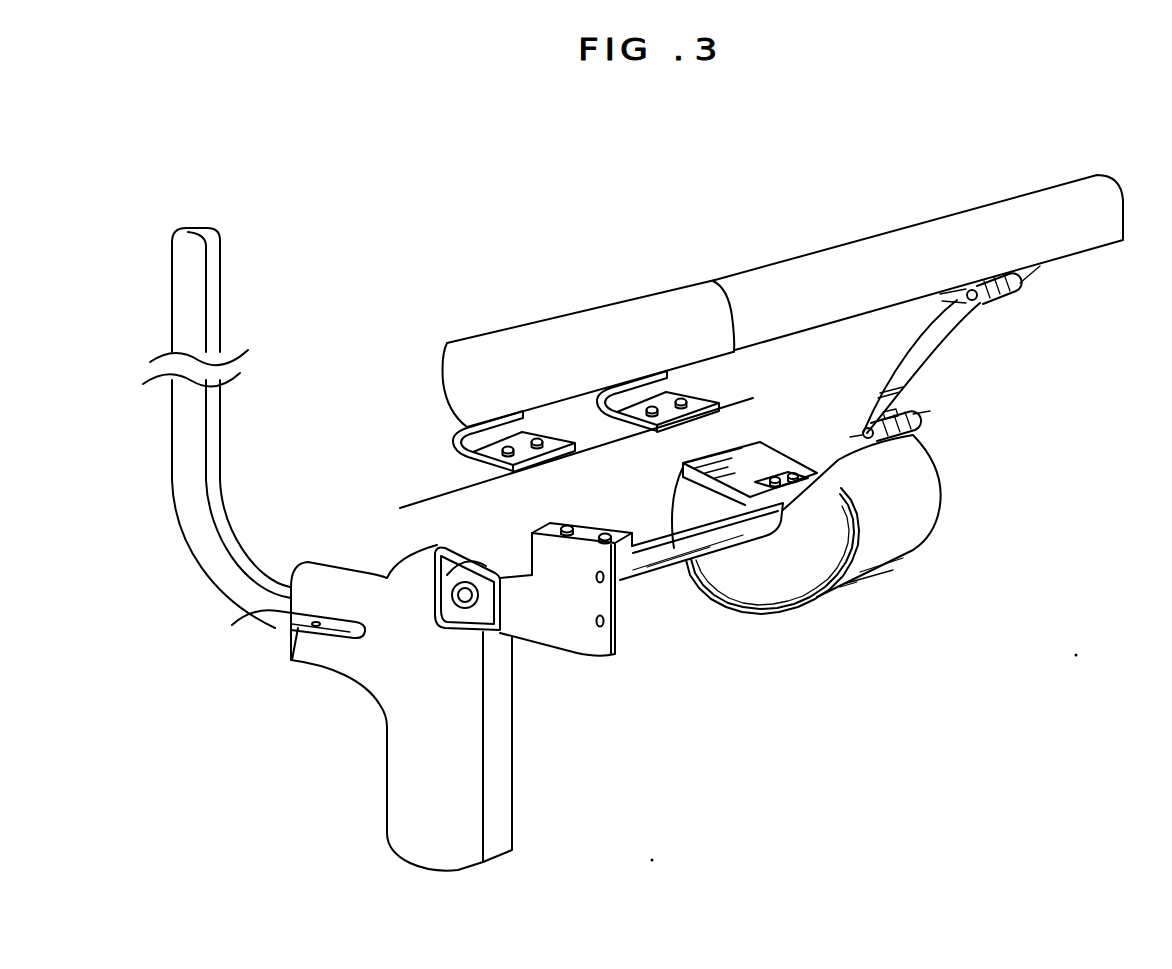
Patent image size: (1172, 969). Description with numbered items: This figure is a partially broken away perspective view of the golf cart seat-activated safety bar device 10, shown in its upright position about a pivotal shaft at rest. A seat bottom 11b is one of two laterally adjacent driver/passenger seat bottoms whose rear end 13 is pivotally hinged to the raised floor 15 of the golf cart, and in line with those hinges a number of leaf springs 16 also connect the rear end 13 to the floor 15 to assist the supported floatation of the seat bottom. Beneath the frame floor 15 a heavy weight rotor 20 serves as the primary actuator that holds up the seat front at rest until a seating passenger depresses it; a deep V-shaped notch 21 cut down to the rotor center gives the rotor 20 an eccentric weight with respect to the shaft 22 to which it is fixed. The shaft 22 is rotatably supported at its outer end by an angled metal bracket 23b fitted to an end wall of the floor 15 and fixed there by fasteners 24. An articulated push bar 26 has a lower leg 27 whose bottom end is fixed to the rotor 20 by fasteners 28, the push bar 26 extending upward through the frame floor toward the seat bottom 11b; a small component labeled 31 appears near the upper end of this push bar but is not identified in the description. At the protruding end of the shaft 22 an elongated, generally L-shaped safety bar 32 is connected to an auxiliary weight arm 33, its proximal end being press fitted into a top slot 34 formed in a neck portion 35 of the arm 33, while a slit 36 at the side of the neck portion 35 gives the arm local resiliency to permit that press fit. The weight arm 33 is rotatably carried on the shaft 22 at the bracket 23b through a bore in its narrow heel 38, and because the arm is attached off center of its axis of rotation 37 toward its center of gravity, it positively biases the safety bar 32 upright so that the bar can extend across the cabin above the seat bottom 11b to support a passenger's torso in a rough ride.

The safety bar device 10 is at (594, 230).
The seat bottom 11b is at (870, 237).
The rear end 13 is at (442, 352).
The raised floor 15 is at (413, 503).
The leaf springs 16 is at (455, 437).
The weight rotor 20 is at (813, 555).
The V-shaped notch 21 is at (768, 462).
The shaft 22 is at (673, 548).
The metal bracket 23b is at (618, 608).
The fasteners 24 is at (932, 357).
The articulated push bar 26 is at (855, 423).
The lower leg 27 is at (903, 437).
The fasteners 28 is at (783, 500).
The pin 31 is at (1020, 285).
The safety bar 32 is at (208, 428).
The auxiliary weight arm 33 is at (452, 778).
The top slot 34 is at (232, 625).
The neck portion 35 is at (323, 567).
The slit 36 is at (290, 660).
The axis of rotation 37 is at (483, 607).
The narrow heel 38 is at (447, 630).